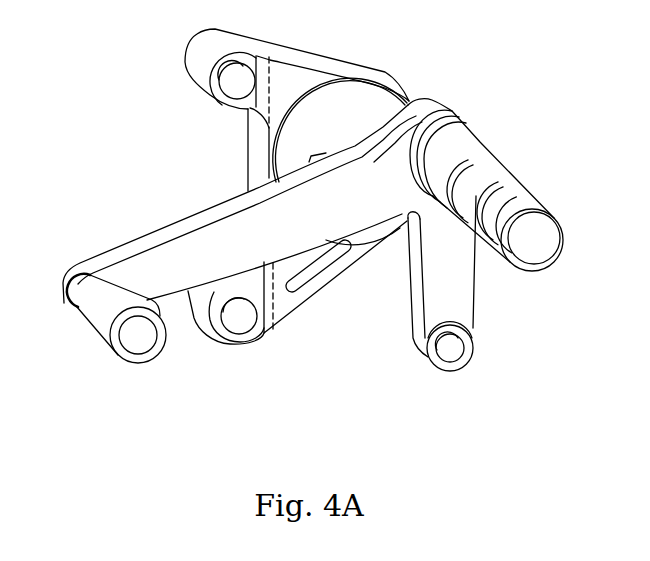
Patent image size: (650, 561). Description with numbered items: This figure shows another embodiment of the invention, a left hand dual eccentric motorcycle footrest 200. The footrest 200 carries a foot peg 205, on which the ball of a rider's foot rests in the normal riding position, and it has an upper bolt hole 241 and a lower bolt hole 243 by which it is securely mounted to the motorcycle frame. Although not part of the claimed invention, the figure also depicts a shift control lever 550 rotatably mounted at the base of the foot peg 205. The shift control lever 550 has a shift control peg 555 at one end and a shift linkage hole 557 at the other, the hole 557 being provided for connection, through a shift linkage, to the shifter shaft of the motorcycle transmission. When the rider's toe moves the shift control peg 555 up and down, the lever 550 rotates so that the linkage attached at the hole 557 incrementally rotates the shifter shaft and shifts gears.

The left hand dual eccentric motorcycle footrest 200 is at (404, 59).
The upper bolt hole 241 is at (224, 87).
The lower bolt hole 243 is at (227, 322).
The foot peg 205 is at (500, 176).
The shift control lever 550 is at (263, 234).
The shift control peg 555 is at (96, 321).
The shift linkage hole 557 is at (460, 348).